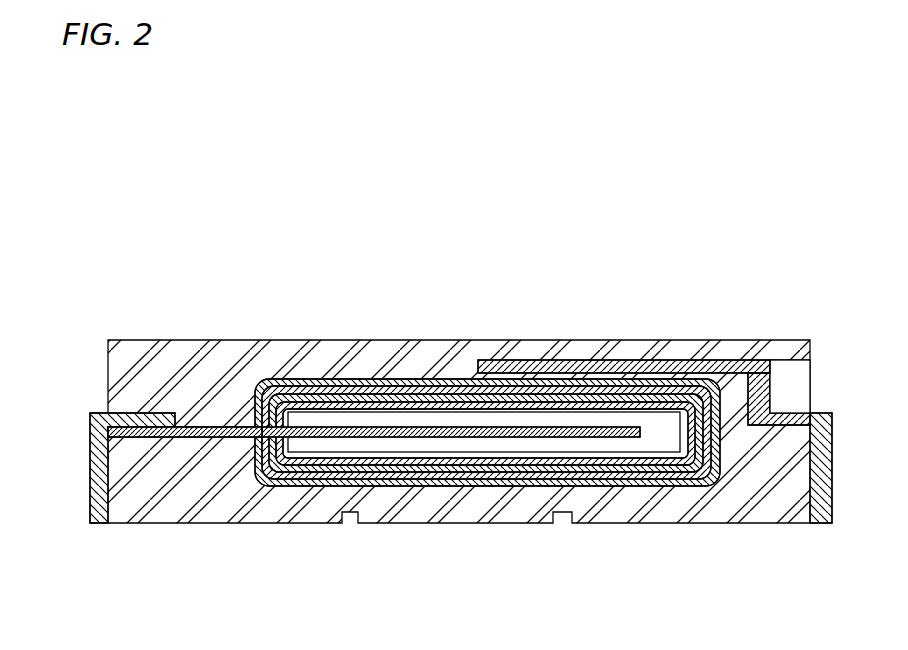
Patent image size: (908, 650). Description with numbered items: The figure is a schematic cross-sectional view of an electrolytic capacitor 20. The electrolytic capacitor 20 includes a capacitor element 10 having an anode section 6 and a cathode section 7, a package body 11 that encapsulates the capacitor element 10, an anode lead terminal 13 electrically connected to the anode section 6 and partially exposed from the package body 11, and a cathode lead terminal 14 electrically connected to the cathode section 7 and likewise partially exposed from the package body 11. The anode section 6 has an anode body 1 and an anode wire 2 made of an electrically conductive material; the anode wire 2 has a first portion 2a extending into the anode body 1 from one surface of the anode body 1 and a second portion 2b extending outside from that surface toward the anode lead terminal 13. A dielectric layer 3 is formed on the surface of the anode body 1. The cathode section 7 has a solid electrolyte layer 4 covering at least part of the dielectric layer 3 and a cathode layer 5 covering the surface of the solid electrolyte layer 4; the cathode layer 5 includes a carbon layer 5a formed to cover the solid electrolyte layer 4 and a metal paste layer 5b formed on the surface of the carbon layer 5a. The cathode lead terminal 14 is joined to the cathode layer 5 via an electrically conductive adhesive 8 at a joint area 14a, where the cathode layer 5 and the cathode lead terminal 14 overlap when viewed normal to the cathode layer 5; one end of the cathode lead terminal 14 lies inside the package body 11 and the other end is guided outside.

The anode body 1 is at (480, 420).
The anode wire 2 is at (452, 410).
The first portion 2a is at (530, 438).
The second portion 2b is at (198, 438).
The dielectric layer 3 is at (400, 404).
The solid electrolyte layer 4 is at (362, 396).
The cathode layer 5 is at (483, 414).
The carbon layer 5a is at (314, 387).
The metal paste layer 5b is at (294, 380).
The anode section 6 is at (485, 360).
The cathode section 7 is at (481, 384).
The electrically conductive adhesive 8 is at (540, 374).
The capacitor element 10 is at (481, 361).
The package body 11 is at (194, 351).
The anode lead terminal 13 is at (97, 486).
The cathode lead terminal 14 is at (822, 471).
The joint area 14a is at (631, 366).
The electrolytic capacitor 20 is at (722, 256).